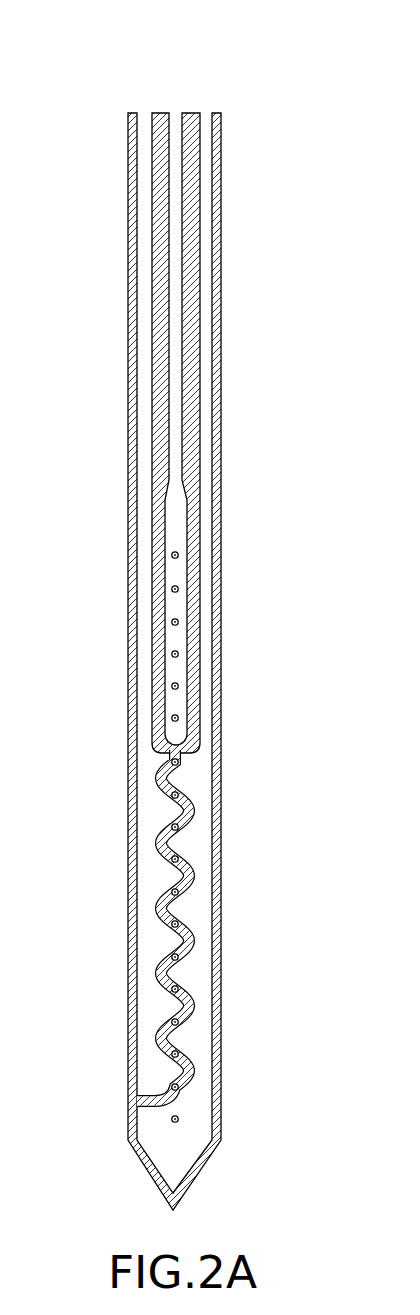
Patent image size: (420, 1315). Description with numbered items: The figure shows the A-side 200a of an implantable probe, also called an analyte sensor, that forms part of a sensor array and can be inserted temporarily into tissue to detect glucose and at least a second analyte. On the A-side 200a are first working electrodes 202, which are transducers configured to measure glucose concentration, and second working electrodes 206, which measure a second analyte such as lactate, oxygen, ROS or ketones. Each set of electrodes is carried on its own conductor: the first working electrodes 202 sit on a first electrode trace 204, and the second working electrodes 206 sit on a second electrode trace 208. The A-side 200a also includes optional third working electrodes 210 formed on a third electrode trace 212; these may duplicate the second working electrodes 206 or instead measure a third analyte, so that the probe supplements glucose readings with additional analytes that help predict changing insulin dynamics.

The A-side 200a is at (140, 85).
The first working electrodes 202 is at (172, 762).
The first electrode trace 204 is at (143, 660).
The second working electrodes 206 is at (178, 859).
The second electrode trace 208 is at (203, 738).
The third working electrodes 210 is at (178, 587).
The third electrode trace 212 is at (180, 506).